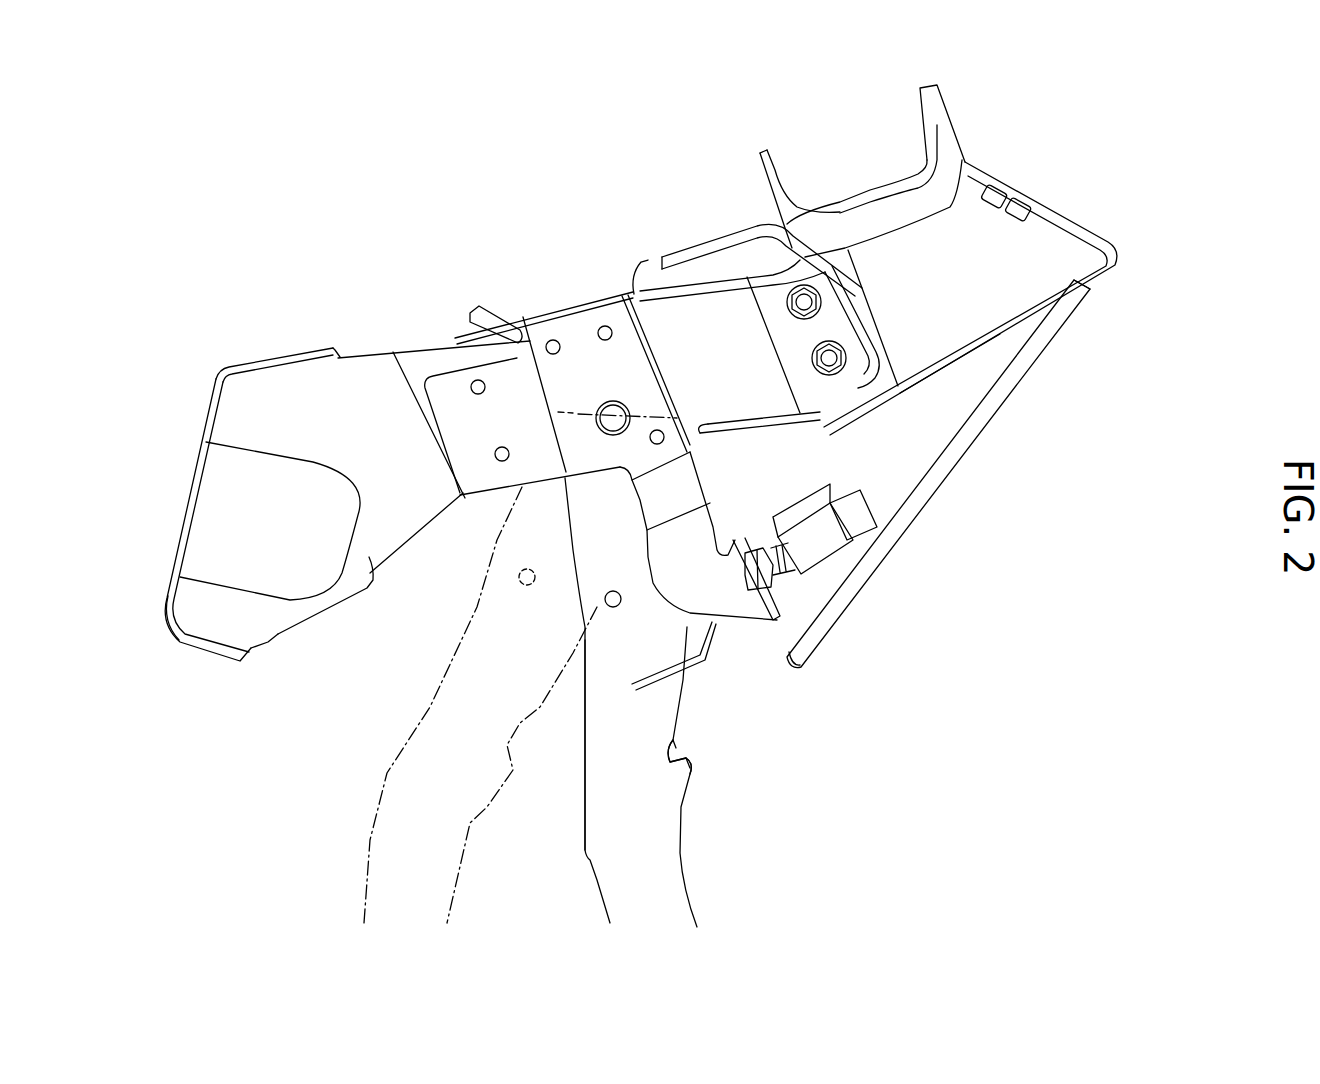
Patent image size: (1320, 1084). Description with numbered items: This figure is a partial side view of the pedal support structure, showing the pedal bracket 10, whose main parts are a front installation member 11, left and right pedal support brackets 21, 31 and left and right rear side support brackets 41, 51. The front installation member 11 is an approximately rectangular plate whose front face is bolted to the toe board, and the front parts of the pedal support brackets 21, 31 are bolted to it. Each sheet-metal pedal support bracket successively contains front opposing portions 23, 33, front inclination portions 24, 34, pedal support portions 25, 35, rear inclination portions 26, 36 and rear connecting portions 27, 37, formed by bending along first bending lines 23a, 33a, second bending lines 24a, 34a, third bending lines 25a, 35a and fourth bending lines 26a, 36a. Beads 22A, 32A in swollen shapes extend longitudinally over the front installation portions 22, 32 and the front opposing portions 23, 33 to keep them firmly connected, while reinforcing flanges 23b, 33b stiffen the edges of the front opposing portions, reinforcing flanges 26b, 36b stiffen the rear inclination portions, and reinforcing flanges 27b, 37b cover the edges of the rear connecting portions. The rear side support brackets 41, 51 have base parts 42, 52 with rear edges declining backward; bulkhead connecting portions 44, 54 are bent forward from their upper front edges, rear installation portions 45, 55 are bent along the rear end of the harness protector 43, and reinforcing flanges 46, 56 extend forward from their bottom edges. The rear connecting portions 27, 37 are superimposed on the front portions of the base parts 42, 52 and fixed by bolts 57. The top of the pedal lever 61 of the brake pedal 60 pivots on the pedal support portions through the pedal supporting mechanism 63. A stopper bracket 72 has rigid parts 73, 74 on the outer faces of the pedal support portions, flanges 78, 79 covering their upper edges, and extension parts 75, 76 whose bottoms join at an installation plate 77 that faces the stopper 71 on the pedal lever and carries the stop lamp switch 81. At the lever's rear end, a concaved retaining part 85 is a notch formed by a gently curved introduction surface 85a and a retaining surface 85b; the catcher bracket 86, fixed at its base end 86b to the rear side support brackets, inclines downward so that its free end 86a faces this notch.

The pedal bracket 10 is at (310, 268).
The front installation member 11 is at (158, 605).
The left pedal support bracket 21 is at (327, 497).
The right pedal support bracket 31 is at (428, 340).
The front installation portion 22 is at (205, 579).
The front installation portion 32 is at (193, 648).
The bead 22A is at (248, 643).
The bead 32A is at (247, 572).
The front opposing portion 23 is at (370, 615).
The front opposing portion 33 is at (373, 580).
The first bending line 23a is at (426, 486).
The first bending line 33a is at (438, 495).
The reinforcing flange 23b is at (277, 334).
The reinforcing flange 33b is at (283, 345).
The front inclination portion 24 is at (520, 367).
The front inclination portion 34 is at (450, 345).
The second bending line 24a is at (516, 304).
The second bending line 34a is at (492, 322).
The pedal support portion 25 is at (574, 361).
The pedal support portion 35 is at (578, 330).
The third bending line 25a is at (654, 235).
The third bending line 35a is at (658, 252).
The rear inclination portion 26 is at (762, 353).
The rear inclination portion 36 is at (733, 407).
The fourth bending line 26a is at (788, 443).
The fourth bending line 36a is at (778, 420).
The reinforcing flange 26b is at (753, 249).
The reinforcing flange 36b is at (678, 258).
The rear connecting portion 27 is at (801, 250).
The rear connecting portion 37 is at (768, 308).
The reinforcing flange 27b is at (874, 191).
The reinforcing flange 37b is at (852, 215).
The left rear side support bracket 41 is at (1027, 277).
The right rear side support bracket 51 is at (1110, 228).
The base part 42 is at (1073, 190).
The base part 52 is at (1035, 252).
The harness protector 43 is at (920, 110).
The bulkhead connecting portion 44 is at (742, 187).
The bulkhead connecting portion 54 is at (745, 215).
The rear installation portion 45 is at (1100, 175).
The rear installation portion 55 is at (1085, 218).
The reinforcing flange 46 is at (950, 337).
The reinforcing flange 56 is at (942, 360).
The bolt 57 is at (790, 305).
The brake pedal 60 is at (598, 893).
The pedal lever 61 is at (597, 823).
The pedal supporting mechanism 63 is at (603, 383).
The stopper 71 is at (655, 660).
The stopper bracket 72 is at (760, 626).
The rigid part 73 is at (557, 478).
The rigid part 74 is at (577, 437).
The extension part 75 is at (672, 536).
The extension part 76 is at (680, 563).
The installation plate 77 is at (736, 540).
The flange 78 is at (544, 264).
The flange 79 is at (575, 306).
The stop lamp switch 81 is at (822, 563).
The concaved retaining part 85 is at (702, 745).
The introduction surface 85a is at (687, 737).
The retaining surface 85b is at (693, 762).
The catcher bracket 86 is at (905, 548).
The free end 86a is at (797, 667).
The base end 86b is at (1093, 305).